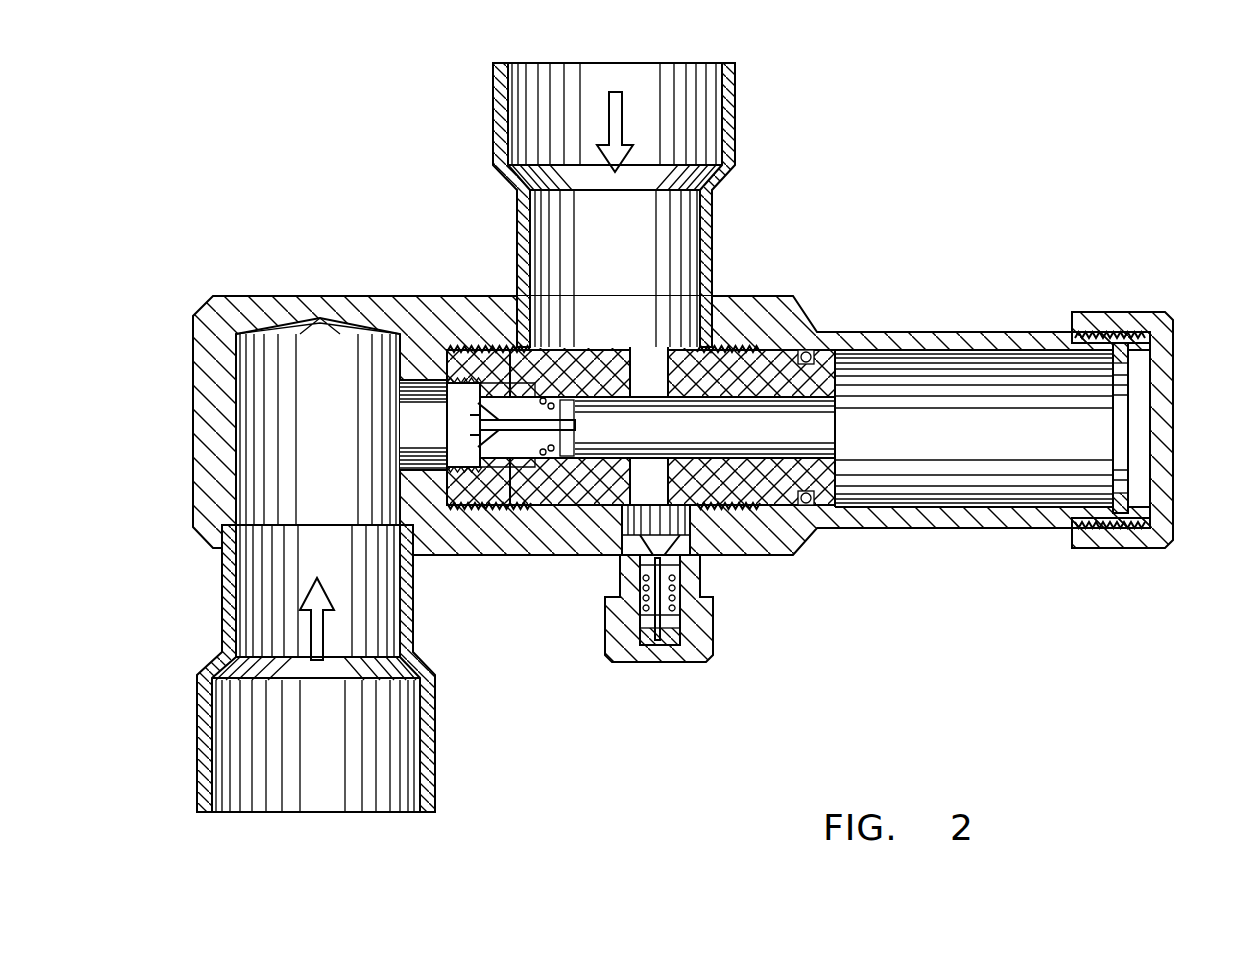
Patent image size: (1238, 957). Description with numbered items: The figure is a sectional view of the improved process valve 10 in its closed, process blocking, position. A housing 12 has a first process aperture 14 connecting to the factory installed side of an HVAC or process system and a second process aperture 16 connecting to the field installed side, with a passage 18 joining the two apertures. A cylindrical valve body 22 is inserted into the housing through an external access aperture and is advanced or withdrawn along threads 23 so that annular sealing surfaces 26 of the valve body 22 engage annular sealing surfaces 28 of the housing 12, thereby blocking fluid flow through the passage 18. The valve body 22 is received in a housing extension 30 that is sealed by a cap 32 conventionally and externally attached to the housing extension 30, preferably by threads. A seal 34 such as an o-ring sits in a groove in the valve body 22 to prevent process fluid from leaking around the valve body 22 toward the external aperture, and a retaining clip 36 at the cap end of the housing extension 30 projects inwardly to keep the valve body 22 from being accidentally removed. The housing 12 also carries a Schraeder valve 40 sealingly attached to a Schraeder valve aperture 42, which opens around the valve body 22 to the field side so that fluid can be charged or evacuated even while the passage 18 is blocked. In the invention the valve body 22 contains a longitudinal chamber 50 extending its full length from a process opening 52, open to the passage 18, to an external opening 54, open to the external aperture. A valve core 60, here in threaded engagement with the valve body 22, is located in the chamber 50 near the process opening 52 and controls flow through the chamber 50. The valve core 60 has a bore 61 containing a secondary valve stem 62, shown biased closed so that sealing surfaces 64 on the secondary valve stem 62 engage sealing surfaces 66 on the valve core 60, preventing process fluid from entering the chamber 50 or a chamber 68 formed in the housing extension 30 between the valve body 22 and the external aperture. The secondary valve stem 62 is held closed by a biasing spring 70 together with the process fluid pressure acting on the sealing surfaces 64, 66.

The process valve 10 is at (929, 146).
The housing 12 is at (265, 296).
The first process aperture 14 is at (437, 773).
The second process aperture 16 is at (737, 112).
The passage 18 is at (333, 401).
The valve body 22 is at (625, 348).
The threads 23 is at (745, 348).
The annular sealing surfaces of the valve body 26 is at (455, 350).
The annular sealing surfaces of the housing 28 is at (430, 350).
The housing extension 30 is at (982, 330).
The cap 32 is at (1125, 312).
The seal 34 is at (810, 348).
The retaining clip 36 is at (1128, 389).
The Schraeder valve 40 is at (680, 660).
The Schraeder valve aperture 42 is at (747, 523).
The longitudinal chamber 50 is at (752, 444).
The process opening 52 is at (440, 398).
The external opening 54 is at (833, 445).
The valve core 60 is at (535, 470).
The bore 61 is at (548, 470).
The secondary valve stem 62 is at (545, 395).
The sealing surfaces of the secondary valve stem 64 is at (445, 447).
The sealing surfaces of the valve core 66 is at (507, 348).
The chamber 68 is at (1020, 448).
The biasing spring 70 is at (583, 403).